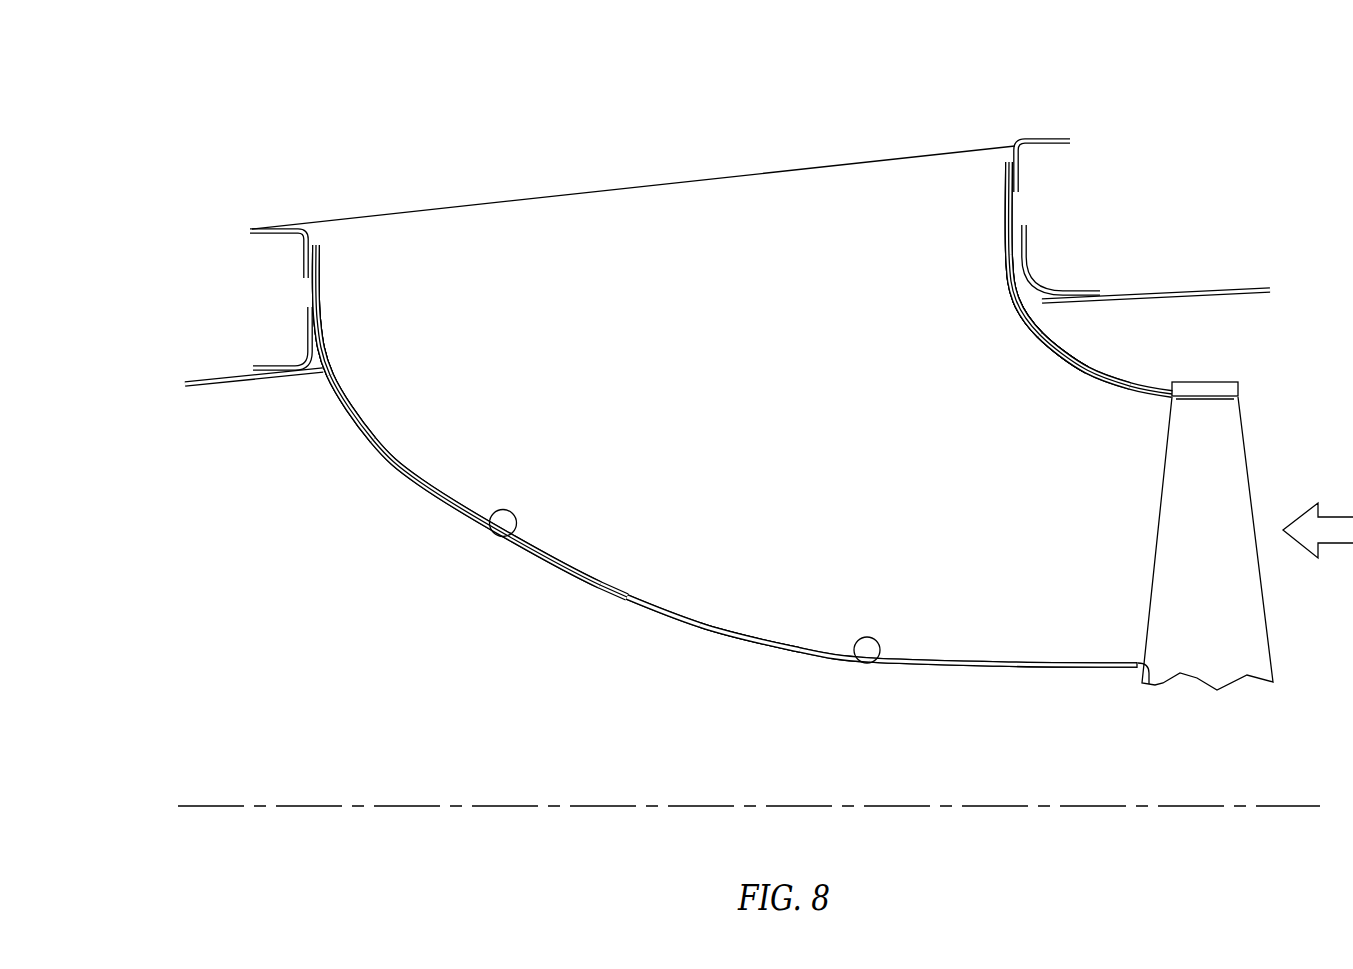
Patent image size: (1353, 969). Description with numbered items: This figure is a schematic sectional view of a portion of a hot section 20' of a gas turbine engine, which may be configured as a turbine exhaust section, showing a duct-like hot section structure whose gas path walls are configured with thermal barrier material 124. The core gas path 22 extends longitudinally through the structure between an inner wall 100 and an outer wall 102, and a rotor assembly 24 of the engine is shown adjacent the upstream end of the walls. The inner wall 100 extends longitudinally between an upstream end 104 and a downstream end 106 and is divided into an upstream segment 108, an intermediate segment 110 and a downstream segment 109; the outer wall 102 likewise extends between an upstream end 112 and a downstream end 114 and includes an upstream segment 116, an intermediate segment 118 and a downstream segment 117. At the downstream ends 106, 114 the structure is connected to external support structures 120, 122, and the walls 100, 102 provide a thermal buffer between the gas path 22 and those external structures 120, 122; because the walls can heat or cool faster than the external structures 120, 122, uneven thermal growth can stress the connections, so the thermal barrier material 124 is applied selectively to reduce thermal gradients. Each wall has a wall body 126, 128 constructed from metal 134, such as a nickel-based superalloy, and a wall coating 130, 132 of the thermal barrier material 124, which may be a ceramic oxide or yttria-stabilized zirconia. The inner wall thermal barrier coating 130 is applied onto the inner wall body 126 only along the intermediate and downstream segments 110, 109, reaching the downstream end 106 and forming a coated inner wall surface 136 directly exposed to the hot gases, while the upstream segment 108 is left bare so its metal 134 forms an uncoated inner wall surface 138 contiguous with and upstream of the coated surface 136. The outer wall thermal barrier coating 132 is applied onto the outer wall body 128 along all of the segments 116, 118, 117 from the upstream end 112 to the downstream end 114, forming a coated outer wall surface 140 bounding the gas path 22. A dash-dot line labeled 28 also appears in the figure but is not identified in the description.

The hot section 20' is at (706, 209).
The core gas path 22 is at (752, 442).
The rotor assembly 24 is at (1193, 688).
The engine centerline axis 28 is at (198, 806).
The inner wall 100 is at (667, 633).
The outer wall 102 is at (1097, 362).
The upstream end 104 is at (1147, 683).
The downstream end 106 is at (311, 228).
The upstream segment 108 is at (933, 632).
The downstream segment 109 is at (350, 293).
The intermediate segment 110 is at (567, 542).
The upstream end 112 is at (1178, 393).
The downstream end 114 is at (1010, 150).
The upstream segment 116 is at (1108, 407).
The downstream segment 117 is at (992, 203).
The intermediate segment 118 is at (1002, 331).
The external structure 120 is at (293, 346).
The external structure 122 is at (1050, 265).
The thermal barrier material 124 is at (420, 472).
The inner wall body 126 is at (758, 643).
The outer wall body 128 is at (1060, 340).
The inner wall thermal barrier coating 130 is at (406, 342).
The outer wall thermal barrier coating 132 is at (958, 295).
The metal 134 is at (952, 512).
The coated inner wall surface 136 is at (503, 535).
The uncoated inner wall surface 138 is at (876, 665).
The coated outer wall surface 140 is at (1083, 369).